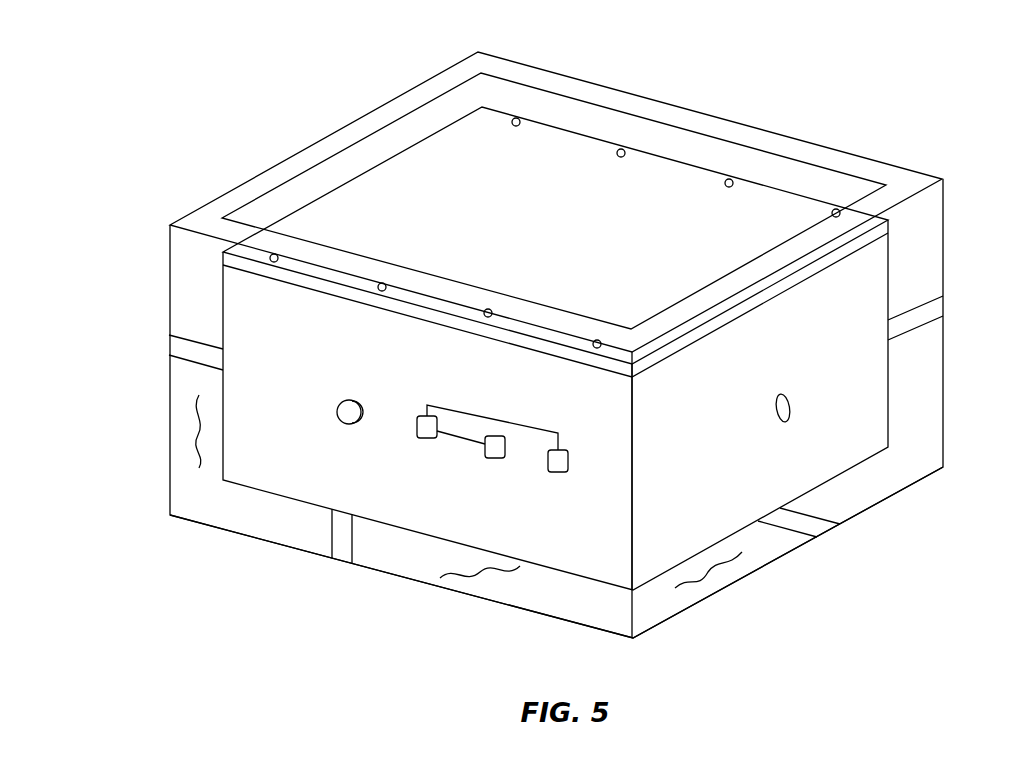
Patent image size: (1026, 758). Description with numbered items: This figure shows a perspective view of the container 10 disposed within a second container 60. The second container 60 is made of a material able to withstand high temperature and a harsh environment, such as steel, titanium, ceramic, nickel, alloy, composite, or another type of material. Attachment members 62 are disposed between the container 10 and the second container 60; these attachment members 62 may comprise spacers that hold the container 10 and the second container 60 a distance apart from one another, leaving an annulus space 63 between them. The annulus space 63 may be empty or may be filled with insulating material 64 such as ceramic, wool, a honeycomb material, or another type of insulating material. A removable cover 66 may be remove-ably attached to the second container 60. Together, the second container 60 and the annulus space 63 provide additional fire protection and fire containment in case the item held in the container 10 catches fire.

The container 10 is at (855, 288).
The second container 60 is at (170, 383).
The attachment members 62 is at (193, 338).
The annulus space 63 is at (185, 277).
The insulating material 64 is at (200, 425).
The removable cover 66 is at (600, 92).